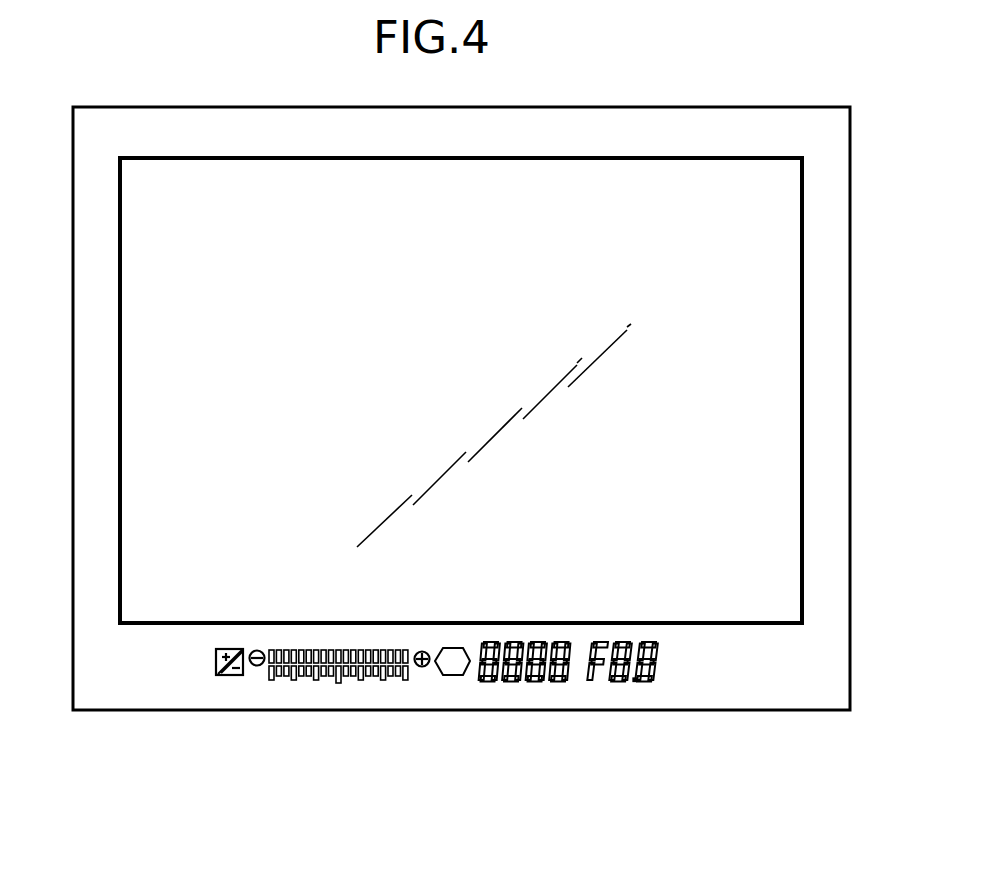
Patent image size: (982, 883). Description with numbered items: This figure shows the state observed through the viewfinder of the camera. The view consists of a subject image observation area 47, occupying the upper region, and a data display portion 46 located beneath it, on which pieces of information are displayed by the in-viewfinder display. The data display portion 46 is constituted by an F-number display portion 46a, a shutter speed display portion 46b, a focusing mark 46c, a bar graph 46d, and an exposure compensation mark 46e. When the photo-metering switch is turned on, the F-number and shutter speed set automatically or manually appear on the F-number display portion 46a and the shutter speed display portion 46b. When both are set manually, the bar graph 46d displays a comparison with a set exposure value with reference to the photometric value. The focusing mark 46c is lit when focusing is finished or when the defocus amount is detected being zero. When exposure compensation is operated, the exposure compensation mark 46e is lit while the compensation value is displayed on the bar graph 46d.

The subject image observation area 47 is at (607, 245).
The data display portion 46 is at (433, 736).
The F-number display portion 46a is at (622, 698).
The shutter speed display portion 46b is at (570, 701).
The focusing mark 46c is at (430, 701).
The bar graph 46d is at (257, 701).
The exposure compensation mark 46e is at (205, 701).